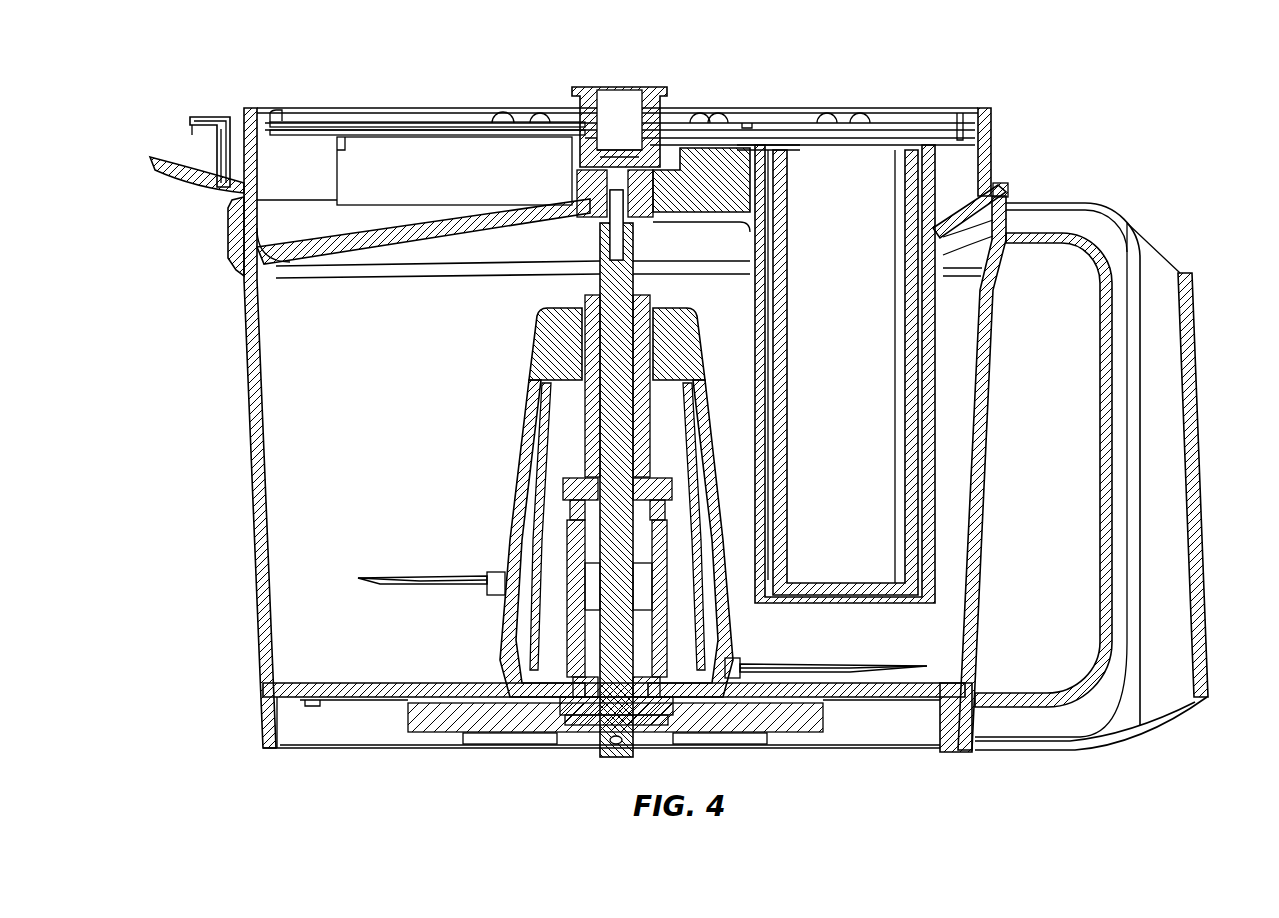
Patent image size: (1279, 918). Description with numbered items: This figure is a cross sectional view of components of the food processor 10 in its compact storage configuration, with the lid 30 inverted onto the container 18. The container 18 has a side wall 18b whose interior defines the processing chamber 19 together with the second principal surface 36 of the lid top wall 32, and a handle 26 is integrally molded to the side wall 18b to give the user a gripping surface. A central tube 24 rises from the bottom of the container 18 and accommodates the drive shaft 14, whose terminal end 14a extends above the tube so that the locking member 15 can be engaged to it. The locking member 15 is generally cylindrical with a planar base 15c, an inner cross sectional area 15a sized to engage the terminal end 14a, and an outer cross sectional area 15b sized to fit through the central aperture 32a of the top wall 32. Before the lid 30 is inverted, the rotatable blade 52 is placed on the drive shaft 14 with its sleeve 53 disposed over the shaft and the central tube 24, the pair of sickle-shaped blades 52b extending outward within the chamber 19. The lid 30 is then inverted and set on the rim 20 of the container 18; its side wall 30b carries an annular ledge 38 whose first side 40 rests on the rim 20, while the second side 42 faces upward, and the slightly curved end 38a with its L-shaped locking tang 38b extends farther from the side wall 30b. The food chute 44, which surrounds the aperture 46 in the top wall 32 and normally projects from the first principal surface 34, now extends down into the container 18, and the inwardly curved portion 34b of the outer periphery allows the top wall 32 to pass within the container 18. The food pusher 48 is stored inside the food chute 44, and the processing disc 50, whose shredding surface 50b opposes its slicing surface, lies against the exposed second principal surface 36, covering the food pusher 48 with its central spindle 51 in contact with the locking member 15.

The food processor 10 is at (1106, 104).
The drive shaft 14 is at (610, 370).
The terminal end of the drive shaft 14a is at (622, 235).
The locking member 15 is at (598, 190).
The inner cross sectional area 15a is at (617, 200).
The outer cross sectional area 15b is at (607, 212).
The planar base 15c is at (665, 168).
The container 18 is at (257, 503).
The side wall 18b is at (258, 537).
The processing chamber 19 is at (401, 447).
The rim 20 is at (246, 205).
The central tube 24 is at (520, 540).
The handle 26 is at (1192, 362).
The lid 30 is at (998, 160).
The side wall of the lid 30b is at (990, 127).
The top wall 32 is at (268, 257).
The central aperture 32a is at (598, 252).
The first principal surface 34 is at (272, 280).
The portion of the outer periphery 34b is at (993, 262).
The second principal surface 36 is at (250, 237).
The annular ledge 38 is at (1005, 196).
The end of the annular ledge 38a is at (165, 175).
The locking tang 38b is at (203, 115).
The first side 40 is at (1010, 195).
The second side 42 is at (1006, 182).
The food chute 44 is at (937, 407).
The aperture 46 is at (883, 146).
The food pusher 48 is at (918, 372).
The processing disc 50 is at (360, 128).
The shredding surface 50b is at (853, 116).
The central spindle 51 is at (620, 105).
The rotatable blade 52 is at (503, 640).
The sickle-shaped blades 52b is at (433, 585).
The sleeve 53 is at (547, 338).